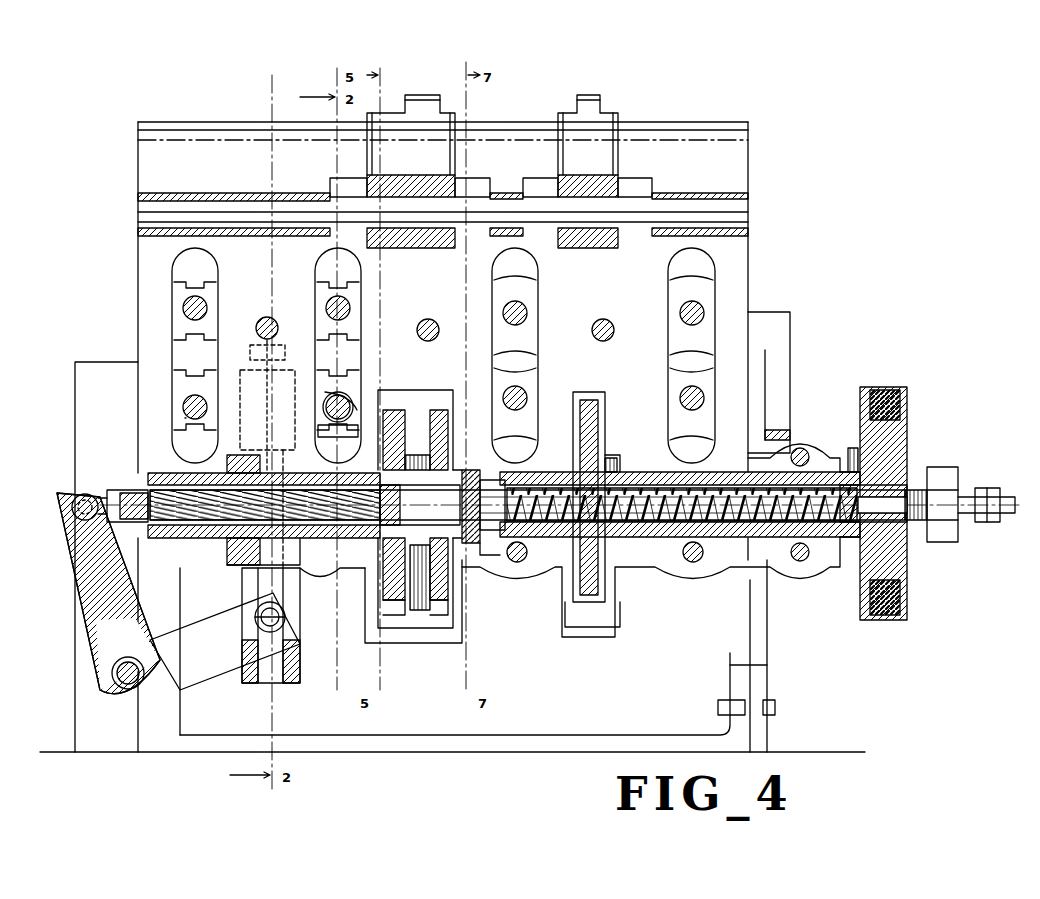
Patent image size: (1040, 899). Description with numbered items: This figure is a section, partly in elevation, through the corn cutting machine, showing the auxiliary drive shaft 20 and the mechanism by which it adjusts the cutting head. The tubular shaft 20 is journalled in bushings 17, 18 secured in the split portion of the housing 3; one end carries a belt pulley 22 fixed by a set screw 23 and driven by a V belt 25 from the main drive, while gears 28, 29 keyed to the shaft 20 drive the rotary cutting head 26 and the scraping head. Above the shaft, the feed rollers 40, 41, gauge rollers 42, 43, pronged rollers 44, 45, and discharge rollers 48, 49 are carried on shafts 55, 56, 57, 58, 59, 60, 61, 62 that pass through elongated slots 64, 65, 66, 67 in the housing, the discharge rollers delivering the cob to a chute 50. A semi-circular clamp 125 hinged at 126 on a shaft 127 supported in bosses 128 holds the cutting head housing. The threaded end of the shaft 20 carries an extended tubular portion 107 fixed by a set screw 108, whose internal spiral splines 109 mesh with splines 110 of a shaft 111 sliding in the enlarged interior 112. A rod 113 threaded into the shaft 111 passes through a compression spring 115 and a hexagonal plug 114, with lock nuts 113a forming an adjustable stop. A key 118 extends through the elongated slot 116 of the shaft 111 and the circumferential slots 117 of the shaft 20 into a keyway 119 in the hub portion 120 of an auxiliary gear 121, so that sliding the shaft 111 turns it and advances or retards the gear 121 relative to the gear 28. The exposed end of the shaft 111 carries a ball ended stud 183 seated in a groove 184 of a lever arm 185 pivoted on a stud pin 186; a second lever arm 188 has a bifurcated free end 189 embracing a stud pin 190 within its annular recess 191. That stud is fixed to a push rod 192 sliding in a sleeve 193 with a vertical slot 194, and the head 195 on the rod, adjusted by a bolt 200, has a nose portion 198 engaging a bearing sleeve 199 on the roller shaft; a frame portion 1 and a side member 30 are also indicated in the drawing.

The machine frame 1 is at (130, 260).
The housing 3 is at (756, 628).
The bushing 17 is at (302, 458).
The bushing 18 is at (722, 472).
The auxiliary drive shaft 20 is at (515, 488).
The belt pulley 22 is at (905, 605).
The set screw 23 is at (852, 456).
The V belt 25 is at (888, 392).
The rotary cutting head 26 is at (440, 340).
The gear 28 is at (418, 408).
The gear 29 is at (598, 412).
The side frame 30 is at (108, 396).
The feed roller 40 is at (185, 285).
The feed roller 41 is at (182, 418).
The gauge roller 42 is at (330, 288).
The gauge roller 43 is at (355, 378).
The pronged roller 44 is at (525, 292).
The pronged roller 45 is at (525, 380).
The discharge roller 48 is at (702, 292).
The discharge roller 49 is at (703, 380).
The chute 50 is at (778, 322).
The shaft 55 is at (183, 308).
The shaft 56 is at (184, 404).
The shaft 57 is at (326, 308).
The shaft 58 is at (326, 408).
The shaft 59 is at (528, 313).
The shaft 60 is at (528, 398).
The shaft 61 is at (705, 313).
The shaft 62 is at (705, 398).
The elongated slot 64 is at (195, 262).
The elongated slot 65 is at (338, 262).
The elongated slot 66 is at (515, 262).
The elongated slot 67 is at (690, 262).
The extended tubular portion 107 is at (208, 540).
The set screw 108 is at (240, 470).
The internal spiral slots and splines 109 is at (170, 545).
The slots and splines 110 is at (145, 530).
The shaft 111 is at (346, 503).
The enlarged interior 112 is at (515, 478).
The rod 113 is at (706, 488).
The lock nuts 113a is at (1000, 488).
The plug 114 is at (870, 520).
The compression spring 115 is at (640, 486).
The elongated slot 116 is at (444, 511).
The circumferential slots 117 is at (470, 470).
The key 118 is at (484, 478).
The keyway 119 is at (468, 545).
The hub portion 120 is at (463, 470).
The auxiliary gear 121 is at (440, 412).
The semi-circular clamp 125 is at (420, 95).
The hinge 126 is at (375, 190).
The shaft 127 is at (250, 212).
The bosses 128 is at (335, 185).
The ball ended stud 183 is at (90, 498).
The groove 184 is at (72, 540).
The lever arm 185 is at (95, 626).
The stud pin 186 is at (122, 670).
The second lever arm 188 is at (215, 625).
The bifurcated free end 189 is at (258, 637).
The stud pin 190 is at (284, 622).
The annular recess 191 is at (292, 638).
The push rod 192 is at (285, 650).
The sleeve 193 is at (252, 593).
The vertical slot 194 is at (287, 672).
The head 195 is at (246, 372).
The nose portion 198 is at (322, 430).
The bearing sleeve 199 is at (325, 398).
The bolt 200 is at (262, 346).